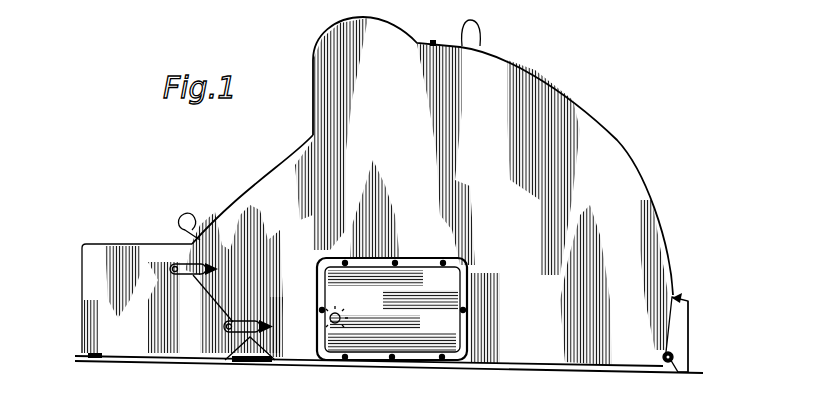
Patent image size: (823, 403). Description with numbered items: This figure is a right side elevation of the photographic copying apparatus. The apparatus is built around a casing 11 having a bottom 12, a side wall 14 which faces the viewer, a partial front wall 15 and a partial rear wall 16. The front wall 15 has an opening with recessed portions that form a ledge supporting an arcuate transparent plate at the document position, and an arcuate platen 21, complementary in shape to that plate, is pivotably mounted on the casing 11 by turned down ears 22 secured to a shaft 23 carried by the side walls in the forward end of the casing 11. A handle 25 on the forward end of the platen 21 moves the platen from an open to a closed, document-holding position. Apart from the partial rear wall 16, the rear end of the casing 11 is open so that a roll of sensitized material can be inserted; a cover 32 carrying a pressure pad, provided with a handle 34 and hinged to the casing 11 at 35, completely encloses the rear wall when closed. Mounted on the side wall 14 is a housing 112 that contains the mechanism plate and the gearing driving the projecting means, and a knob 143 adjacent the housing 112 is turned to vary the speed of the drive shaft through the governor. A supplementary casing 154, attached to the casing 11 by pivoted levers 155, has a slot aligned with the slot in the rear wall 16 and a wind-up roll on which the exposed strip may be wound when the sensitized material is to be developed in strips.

The casing 11 is at (657, 236).
The bottom 12 is at (575, 371).
The side wall 14 is at (426, 191).
The partial front wall 15 is at (687, 339).
The partial rear wall 16 is at (250, 340).
The arcuate platen 21 is at (676, 297).
The turned down ears 22 is at (684, 314).
The shaft 23 is at (680, 375).
The handle 25 is at (482, 34).
The cover 32 is at (278, 165).
The handle 34 is at (180, 217).
The hinge 35 is at (433, 43).
The housing 112 is at (463, 290).
The knob 143 is at (330, 322).
The supplementary casing 154 is at (88, 288).
The pivoted levers 155 is at (230, 323).